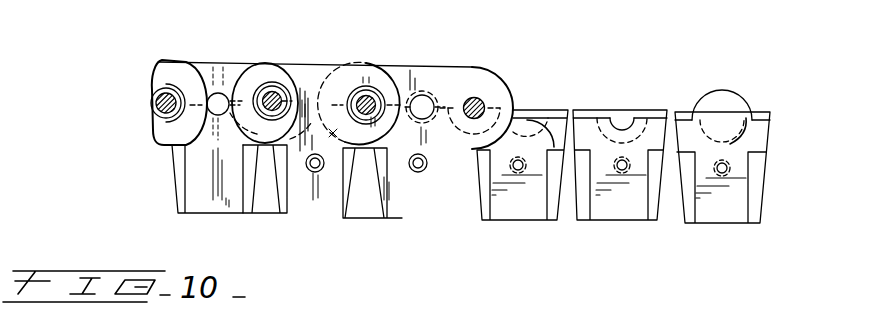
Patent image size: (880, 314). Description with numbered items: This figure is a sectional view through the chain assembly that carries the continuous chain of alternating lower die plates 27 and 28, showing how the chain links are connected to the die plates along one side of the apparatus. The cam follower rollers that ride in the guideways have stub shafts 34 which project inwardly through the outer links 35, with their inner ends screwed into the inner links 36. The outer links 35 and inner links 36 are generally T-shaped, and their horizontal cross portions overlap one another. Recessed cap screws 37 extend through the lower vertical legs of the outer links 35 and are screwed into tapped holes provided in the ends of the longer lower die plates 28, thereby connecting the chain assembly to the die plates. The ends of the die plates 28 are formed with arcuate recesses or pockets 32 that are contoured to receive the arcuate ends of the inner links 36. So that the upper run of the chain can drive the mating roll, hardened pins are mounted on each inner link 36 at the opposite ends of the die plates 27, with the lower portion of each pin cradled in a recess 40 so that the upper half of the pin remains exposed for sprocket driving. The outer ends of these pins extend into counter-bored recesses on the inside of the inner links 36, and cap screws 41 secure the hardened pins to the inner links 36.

The lower die plate 27 is at (190, 215).
The longer lower die plate 28 is at (292, 215).
The arcuate recess 32 is at (722, 112).
The stub shaft 34 is at (275, 90).
The outer link 35 is at (238, 86).
The inner link 36 is at (513, 103).
The recessed cap screw 37 is at (319, 172).
The recess 40 is at (623, 120).
The cap screw 41 is at (421, 95).